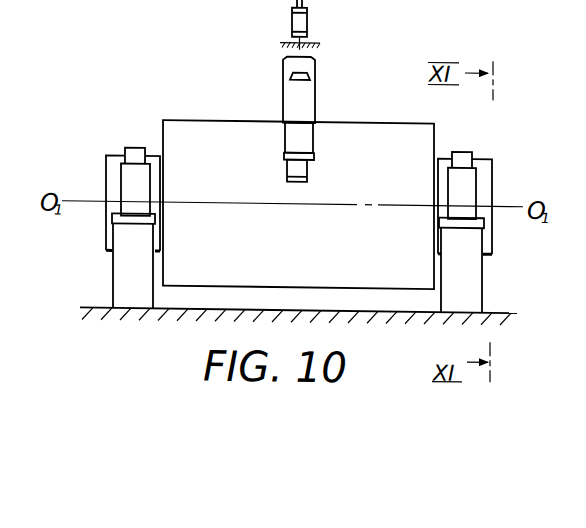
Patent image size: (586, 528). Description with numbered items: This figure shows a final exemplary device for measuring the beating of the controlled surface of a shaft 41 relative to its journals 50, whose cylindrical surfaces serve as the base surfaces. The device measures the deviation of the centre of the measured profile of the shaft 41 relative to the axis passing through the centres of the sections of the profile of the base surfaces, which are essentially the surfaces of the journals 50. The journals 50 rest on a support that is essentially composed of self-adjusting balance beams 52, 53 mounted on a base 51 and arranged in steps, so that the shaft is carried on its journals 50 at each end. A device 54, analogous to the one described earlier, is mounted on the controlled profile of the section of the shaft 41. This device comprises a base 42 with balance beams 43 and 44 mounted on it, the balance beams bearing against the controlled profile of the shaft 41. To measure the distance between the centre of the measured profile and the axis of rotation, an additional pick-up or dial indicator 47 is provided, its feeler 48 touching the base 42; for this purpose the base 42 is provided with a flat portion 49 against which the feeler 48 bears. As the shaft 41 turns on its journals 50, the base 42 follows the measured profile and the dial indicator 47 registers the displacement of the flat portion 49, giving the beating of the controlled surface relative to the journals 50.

The shaft 41 is at (398, 107).
The base 42 is at (312, 90).
The balance beam 43 is at (303, 145).
The balance beam 44 is at (302, 170).
The dial indicator 47 is at (307, 22).
The feeler 48 is at (298, 43).
The flat portion 49 is at (303, 54).
The journal 50 is at (118, 158).
The base 51 is at (127, 275).
The self-adjusting balance beam 52 is at (460, 184).
The self-adjusting balance beam 53 is at (463, 151).
The device 54 is at (280, 108).